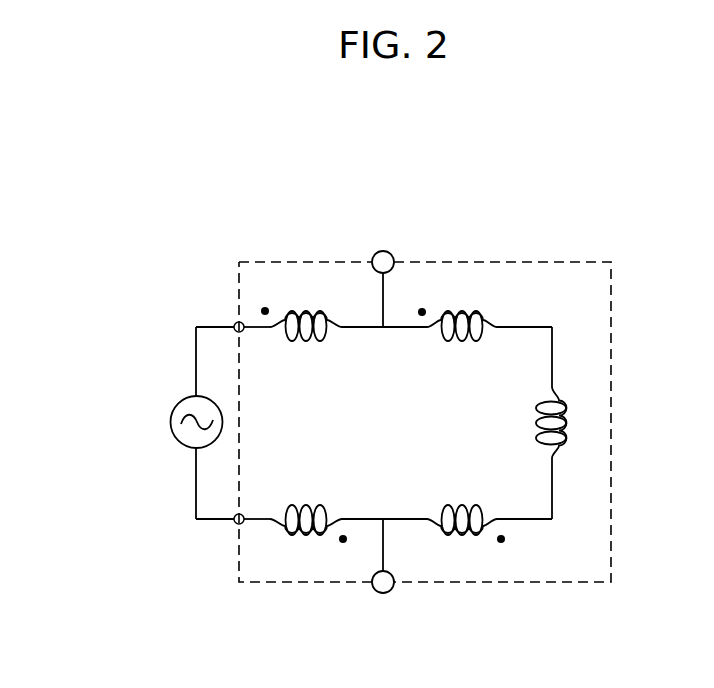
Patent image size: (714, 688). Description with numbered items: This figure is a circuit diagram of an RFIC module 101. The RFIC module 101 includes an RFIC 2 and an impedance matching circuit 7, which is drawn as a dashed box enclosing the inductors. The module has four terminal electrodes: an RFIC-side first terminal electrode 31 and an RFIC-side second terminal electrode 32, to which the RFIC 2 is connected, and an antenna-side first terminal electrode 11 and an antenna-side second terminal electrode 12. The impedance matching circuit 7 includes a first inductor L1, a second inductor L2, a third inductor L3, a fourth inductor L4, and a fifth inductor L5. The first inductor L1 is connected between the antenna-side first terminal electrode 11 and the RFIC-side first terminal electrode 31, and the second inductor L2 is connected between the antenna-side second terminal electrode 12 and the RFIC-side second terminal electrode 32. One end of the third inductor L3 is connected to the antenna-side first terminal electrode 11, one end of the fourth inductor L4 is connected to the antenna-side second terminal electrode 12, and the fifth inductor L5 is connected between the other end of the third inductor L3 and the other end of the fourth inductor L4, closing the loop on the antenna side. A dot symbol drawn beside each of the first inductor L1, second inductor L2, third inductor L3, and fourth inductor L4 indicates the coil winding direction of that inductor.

The RFIC module 101 is at (212, 178).
The RFIC 2 is at (170, 419).
The RFIC-side first terminal electrode 31 is at (236, 323).
The RFIC-side second terminal electrode 32 is at (239, 525).
The antenna-side first terminal electrode 11 is at (383, 251).
The antenna-side second terminal electrode 12 is at (383, 593).
The impedance matching circuit 7 is at (613, 370).
The first inductor L1 is at (301, 310).
The second inductor L2 is at (308, 539).
The third inductor L3 is at (457, 310).
The fourth inductor L4 is at (466, 539).
The fifth inductor L5 is at (569, 422).